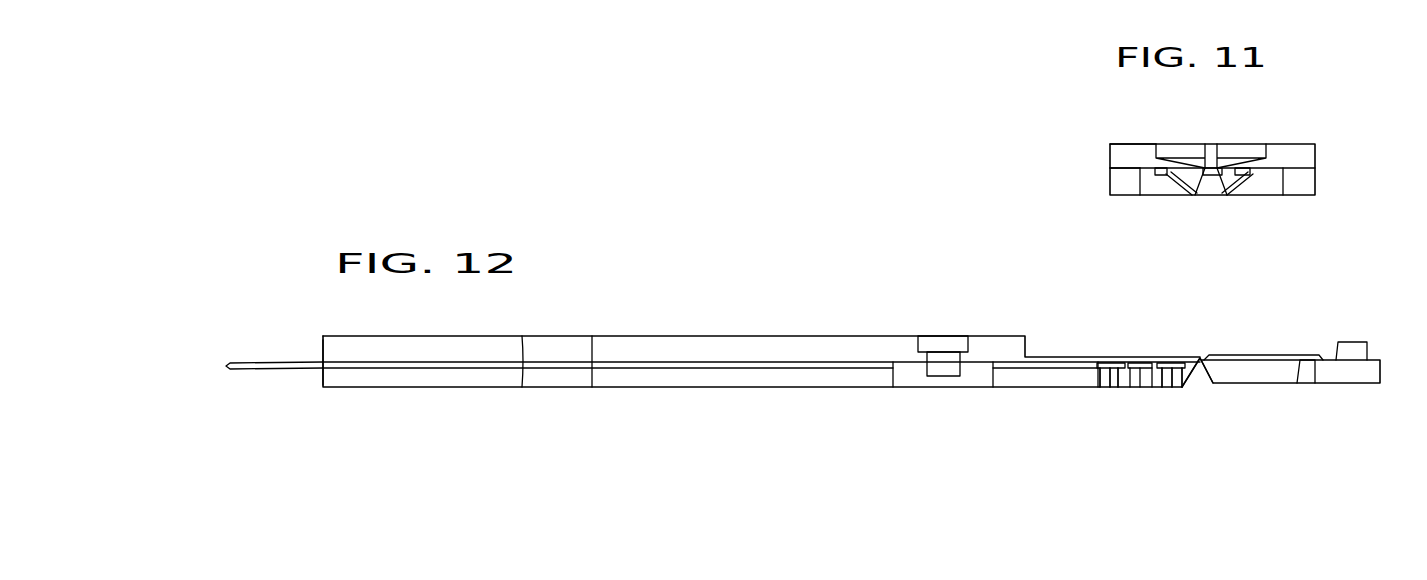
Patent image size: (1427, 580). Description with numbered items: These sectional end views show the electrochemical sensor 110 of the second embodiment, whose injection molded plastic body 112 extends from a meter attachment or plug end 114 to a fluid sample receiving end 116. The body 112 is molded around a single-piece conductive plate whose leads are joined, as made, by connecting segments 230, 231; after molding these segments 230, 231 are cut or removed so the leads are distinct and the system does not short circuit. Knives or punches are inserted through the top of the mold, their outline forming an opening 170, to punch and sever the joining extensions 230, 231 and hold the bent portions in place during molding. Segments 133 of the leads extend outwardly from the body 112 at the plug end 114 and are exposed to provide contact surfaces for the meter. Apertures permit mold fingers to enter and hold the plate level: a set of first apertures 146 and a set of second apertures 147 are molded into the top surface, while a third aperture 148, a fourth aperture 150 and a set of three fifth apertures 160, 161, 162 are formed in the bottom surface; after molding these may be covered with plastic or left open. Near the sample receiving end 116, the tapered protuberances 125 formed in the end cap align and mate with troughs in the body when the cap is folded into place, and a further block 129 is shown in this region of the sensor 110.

In FIG. 11, the sensor 110 is at (1122, 212).
In FIG. 12, the sensor 110 is at (1237, 432).
In FIG. 11, the molded plastic body 112 is at (1125, 150).
In FIG. 12, the molded plastic body 112 is at (415, 375).
In FIG. 12, the plug end 114 is at (312, 380).
In FIG. 12, the fluid sample receiving end 116 is at (1207, 392).
In FIG. 12, the tapered protuberances 125 is at (1352, 345).
In FIG. 12, the spacer block 129 is at (1305, 392).
In FIG. 12, the segments of the leads 133 is at (250, 360).
In FIG. 12, the first apertures 146 is at (533, 343).
In FIG. 12, the second apertures 147 is at (930, 338).
In FIG. 12, the third aperture 148 is at (553, 380).
In FIG. 11, the fourth aperture 150 is at (1148, 187).
In FIG. 12, the fourth aperture 150 is at (908, 378).
In FIG. 12, the fifth aperture 160 is at (1140, 393).
In FIG. 12, the fifth aperture 161 is at (1108, 393).
In FIG. 12, the fifth aperture 162 is at (1170, 393).
In FIG. 11, the opening formed by the knives/punches 170 is at (1168, 152).
In FIG. 11, the connecting segment 230 is at (1254, 197).
In FIG. 11, the connecting segment 231 is at (1181, 199).